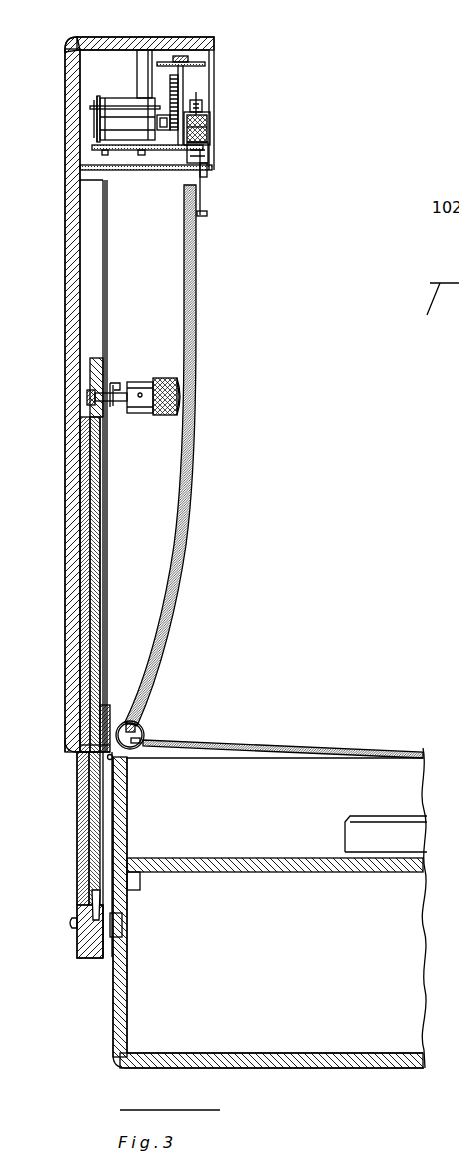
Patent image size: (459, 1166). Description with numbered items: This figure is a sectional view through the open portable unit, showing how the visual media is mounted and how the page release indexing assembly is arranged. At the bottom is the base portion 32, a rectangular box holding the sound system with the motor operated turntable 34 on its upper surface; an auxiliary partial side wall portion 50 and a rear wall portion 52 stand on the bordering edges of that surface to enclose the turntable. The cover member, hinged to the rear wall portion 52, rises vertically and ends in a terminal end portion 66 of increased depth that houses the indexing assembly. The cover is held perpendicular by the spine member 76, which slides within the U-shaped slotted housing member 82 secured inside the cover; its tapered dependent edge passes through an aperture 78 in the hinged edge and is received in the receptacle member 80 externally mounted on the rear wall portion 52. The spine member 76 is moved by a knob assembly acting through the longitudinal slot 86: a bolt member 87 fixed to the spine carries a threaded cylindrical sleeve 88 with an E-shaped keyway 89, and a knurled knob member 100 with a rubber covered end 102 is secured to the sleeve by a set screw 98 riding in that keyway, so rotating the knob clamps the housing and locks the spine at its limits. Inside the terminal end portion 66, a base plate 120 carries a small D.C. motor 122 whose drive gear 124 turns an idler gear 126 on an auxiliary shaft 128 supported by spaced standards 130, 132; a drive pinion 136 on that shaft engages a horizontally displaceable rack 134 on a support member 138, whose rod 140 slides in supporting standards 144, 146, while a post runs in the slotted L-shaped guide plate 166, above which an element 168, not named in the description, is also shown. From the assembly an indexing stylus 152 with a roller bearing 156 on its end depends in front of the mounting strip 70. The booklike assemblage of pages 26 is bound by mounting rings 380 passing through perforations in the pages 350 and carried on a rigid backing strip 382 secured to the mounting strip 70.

The pages 26 is at (226, 702).
The bottom or base portion 32 is at (220, 1055).
The turntable 34 is at (362, 828).
The auxiliary partial side wall portion 50 is at (246, 782).
The rear wall portion 52 is at (122, 812).
The terminal end portion 66 is at (122, 38).
The mounting strip 70 is at (106, 712).
The spine member 76 is at (95, 562).
The aperture 78 is at (92, 752).
The receptacle member 80 is at (80, 843).
The housing member 82 is at (160, 172).
The slot 86 is at (104, 304).
The bolt member 87 is at (92, 397).
The cylindrical sleeve 88 is at (118, 385).
The E-shaped keyway 89 is at (118, 406).
The set screw 98 is at (140, 400).
The knurled knob member 100 is at (163, 377).
The rubber covered end 102 is at (180, 393).
The base plate 120 is at (103, 152).
The D.C. motor 122 is at (120, 105).
The drive gear 124 is at (165, 128).
The idler gear 126 is at (176, 90).
The auxiliary shaft 128 is at (100, 100).
The standard 130 is at (97, 117).
The standard 132 is at (197, 158).
The rack 134 is at (203, 118).
The drive pinion 136 is at (196, 103).
The support member 138 is at (210, 127).
The rod 140 is at (203, 133).
The supporting standard 144 is at (197, 142).
The supporting standard 146 is at (205, 155).
The indexing stylus 152 is at (200, 190).
The roller bearing 156 is at (204, 216).
The L-shaped guide plate 166 is at (186, 60).
The shelf 168 is at (205, 63).
The pages 350 is at (172, 626).
The mounting rings 380 is at (141, 727).
The backing strip 382 is at (102, 760).